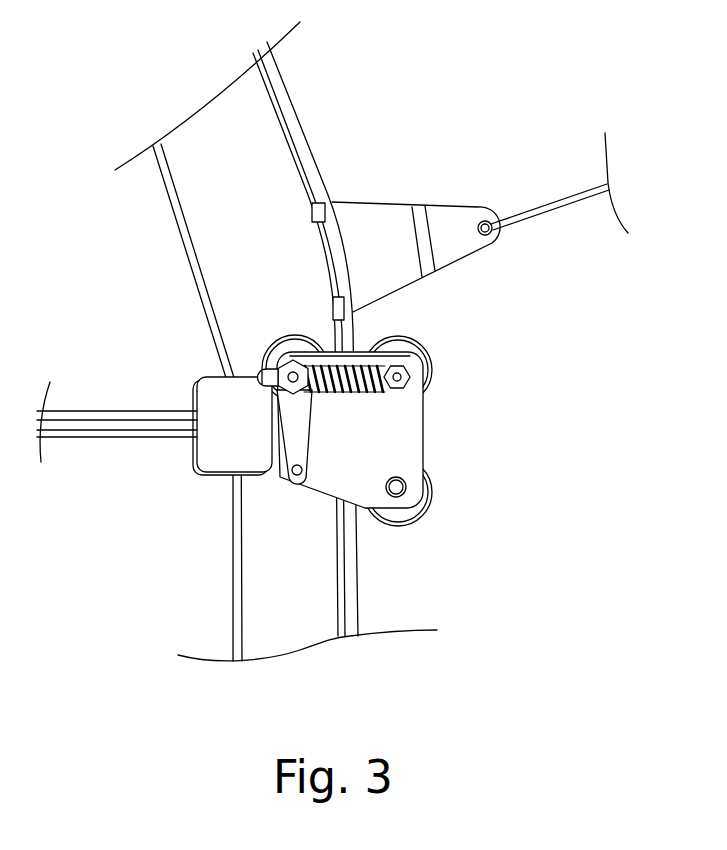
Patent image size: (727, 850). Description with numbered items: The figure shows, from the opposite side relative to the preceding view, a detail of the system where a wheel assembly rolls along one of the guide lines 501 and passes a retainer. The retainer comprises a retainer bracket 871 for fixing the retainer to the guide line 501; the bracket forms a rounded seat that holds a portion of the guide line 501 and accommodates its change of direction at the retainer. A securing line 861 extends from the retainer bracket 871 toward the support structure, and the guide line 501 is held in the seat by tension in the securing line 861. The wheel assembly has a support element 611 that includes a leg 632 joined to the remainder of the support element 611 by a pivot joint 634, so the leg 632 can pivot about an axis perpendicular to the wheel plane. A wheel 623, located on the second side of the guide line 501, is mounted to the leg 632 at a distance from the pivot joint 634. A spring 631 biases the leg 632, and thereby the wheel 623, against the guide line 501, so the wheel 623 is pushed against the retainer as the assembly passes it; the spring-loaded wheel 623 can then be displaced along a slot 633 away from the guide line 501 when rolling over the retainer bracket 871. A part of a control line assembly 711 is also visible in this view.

The guide line 501 is at (290, 98).
The support tube 711 is at (177, 235).
The retainer bracket 871 is at (373, 202).
The securing line 861 is at (527, 210).
The wheel 623 is at (300, 335).
The slot 633 is at (260, 366).
The spring 631 is at (357, 390).
The leg 632 is at (275, 412).
The pivot joint 634 is at (297, 470).
The support element 611 is at (313, 492).